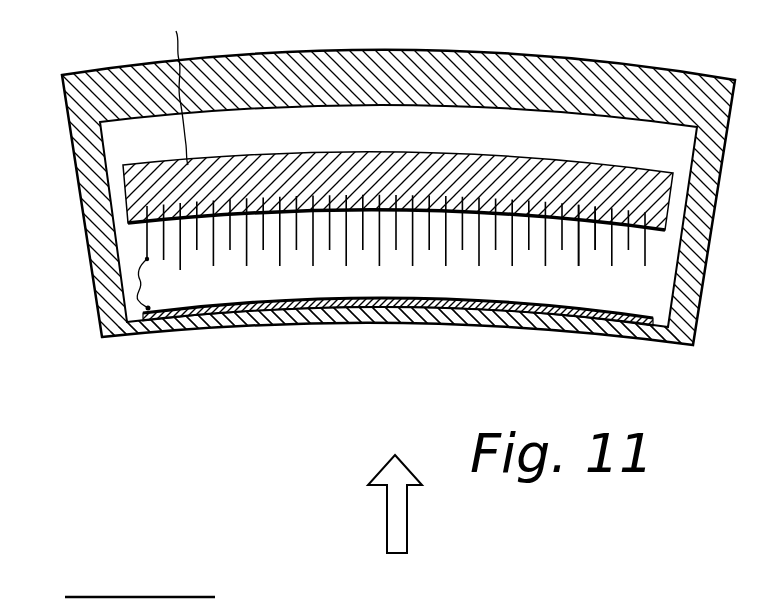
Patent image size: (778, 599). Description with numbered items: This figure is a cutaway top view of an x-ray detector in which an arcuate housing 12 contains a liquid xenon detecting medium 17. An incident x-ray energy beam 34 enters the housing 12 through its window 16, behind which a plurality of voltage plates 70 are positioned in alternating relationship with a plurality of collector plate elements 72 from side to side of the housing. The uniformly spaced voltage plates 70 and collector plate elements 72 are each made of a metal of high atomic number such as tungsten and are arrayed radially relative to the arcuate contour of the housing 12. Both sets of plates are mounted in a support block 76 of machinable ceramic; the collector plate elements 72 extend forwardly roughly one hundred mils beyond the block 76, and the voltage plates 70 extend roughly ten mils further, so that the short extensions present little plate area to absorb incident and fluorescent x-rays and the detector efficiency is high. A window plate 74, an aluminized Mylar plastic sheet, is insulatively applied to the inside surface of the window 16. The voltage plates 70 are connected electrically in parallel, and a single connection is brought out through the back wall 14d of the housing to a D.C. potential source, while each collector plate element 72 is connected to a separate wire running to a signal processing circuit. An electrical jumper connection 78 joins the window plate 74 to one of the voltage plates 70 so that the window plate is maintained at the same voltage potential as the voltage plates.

The housing 12 is at (85, 247).
The back wall 14d is at (617, 62).
The window 16 is at (500, 323).
The liquid xenon detecting medium 17 is at (562, 149).
The incident x-ray energy beam 34 is at (388, 515).
The voltage plates 70 is at (613, 267).
The collector plate elements 72 is at (593, 247).
The window plate 74 is at (235, 296).
The support block 76 is at (171, 88).
The electrical jumper connection 78 is at (98, 313).